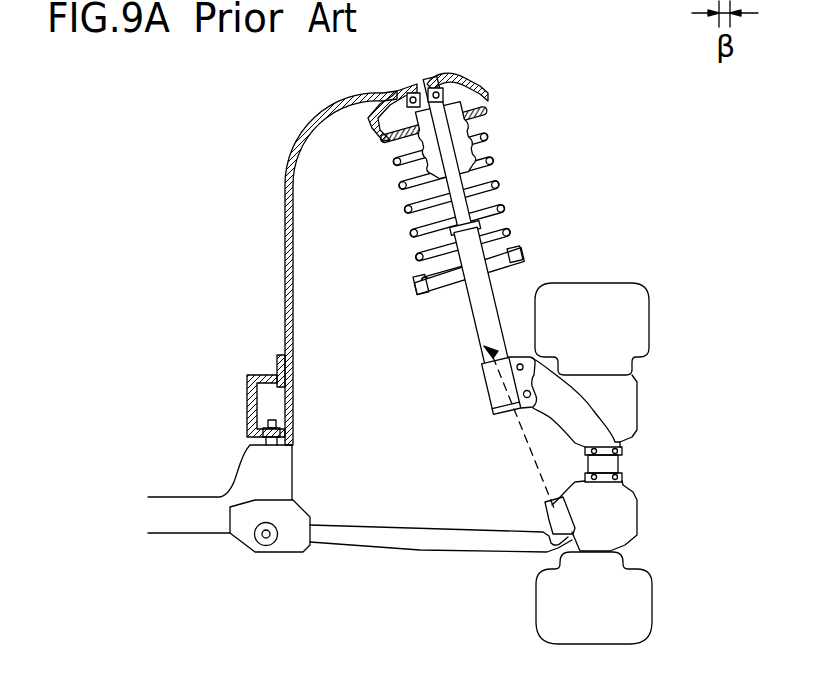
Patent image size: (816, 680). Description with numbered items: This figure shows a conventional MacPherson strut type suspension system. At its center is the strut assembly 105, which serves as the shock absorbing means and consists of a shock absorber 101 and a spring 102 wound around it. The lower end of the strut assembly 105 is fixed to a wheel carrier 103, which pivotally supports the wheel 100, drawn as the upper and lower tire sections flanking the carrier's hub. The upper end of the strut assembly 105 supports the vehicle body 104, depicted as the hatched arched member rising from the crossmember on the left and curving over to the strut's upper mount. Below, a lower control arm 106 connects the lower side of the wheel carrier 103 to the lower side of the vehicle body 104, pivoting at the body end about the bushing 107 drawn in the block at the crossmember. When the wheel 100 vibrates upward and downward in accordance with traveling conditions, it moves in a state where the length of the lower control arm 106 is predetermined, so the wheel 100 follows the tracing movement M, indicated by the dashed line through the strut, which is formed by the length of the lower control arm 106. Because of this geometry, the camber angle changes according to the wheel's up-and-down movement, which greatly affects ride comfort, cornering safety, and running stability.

The wheel 100 is at (641, 321).
The shock absorber 101 is at (463, 246).
The spring 102 is at (451, 197).
The wheel carrier 103 is at (595, 428).
The vehicle body 104 is at (285, 250).
The strut assembly 105 is at (534, 246).
The lower control arm 106 is at (398, 550).
The lower arm pivot bushing 107 is at (266, 541).
The tracing movement M is at (530, 453).